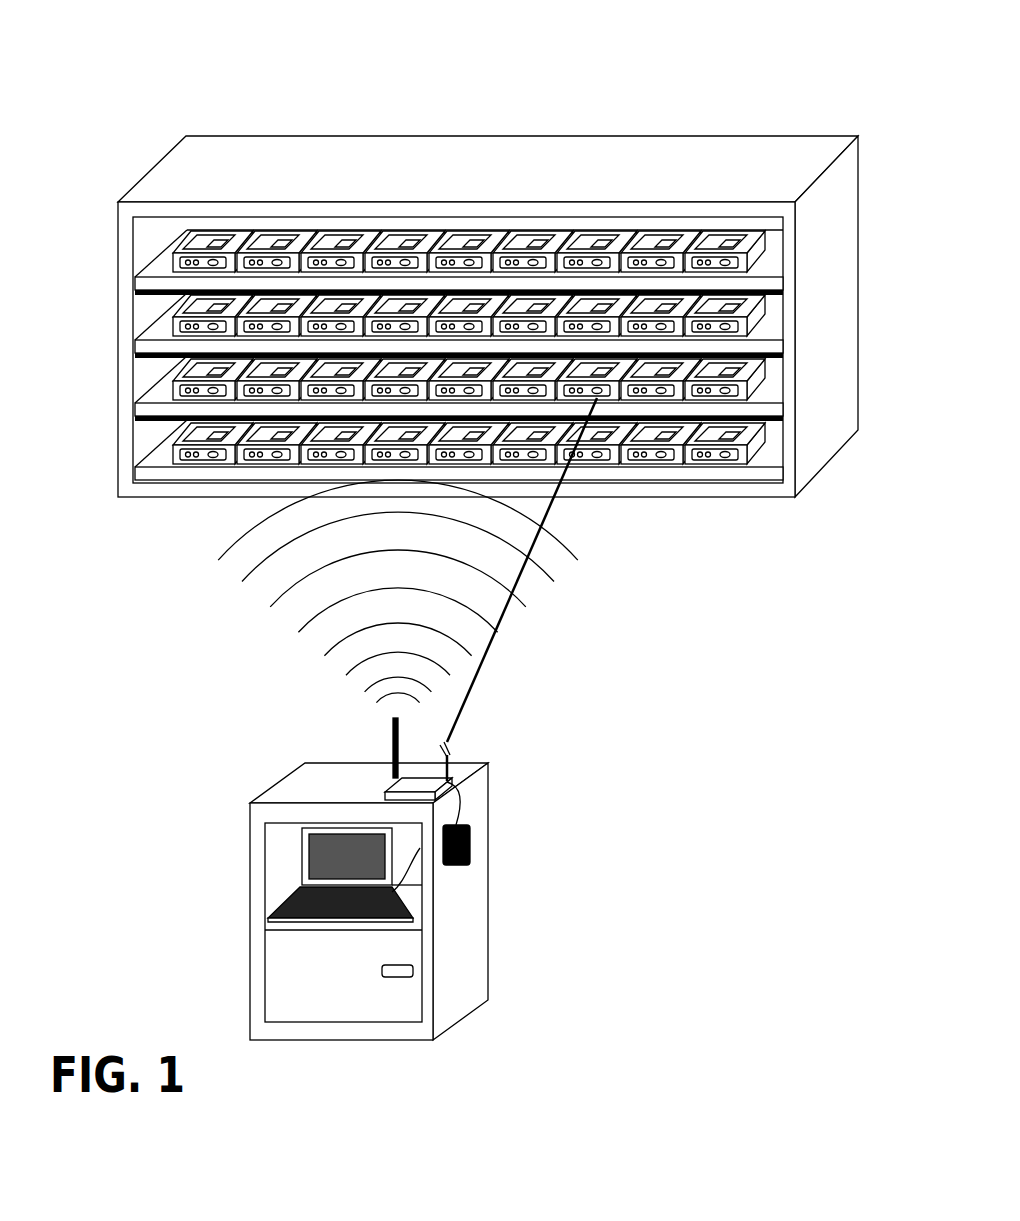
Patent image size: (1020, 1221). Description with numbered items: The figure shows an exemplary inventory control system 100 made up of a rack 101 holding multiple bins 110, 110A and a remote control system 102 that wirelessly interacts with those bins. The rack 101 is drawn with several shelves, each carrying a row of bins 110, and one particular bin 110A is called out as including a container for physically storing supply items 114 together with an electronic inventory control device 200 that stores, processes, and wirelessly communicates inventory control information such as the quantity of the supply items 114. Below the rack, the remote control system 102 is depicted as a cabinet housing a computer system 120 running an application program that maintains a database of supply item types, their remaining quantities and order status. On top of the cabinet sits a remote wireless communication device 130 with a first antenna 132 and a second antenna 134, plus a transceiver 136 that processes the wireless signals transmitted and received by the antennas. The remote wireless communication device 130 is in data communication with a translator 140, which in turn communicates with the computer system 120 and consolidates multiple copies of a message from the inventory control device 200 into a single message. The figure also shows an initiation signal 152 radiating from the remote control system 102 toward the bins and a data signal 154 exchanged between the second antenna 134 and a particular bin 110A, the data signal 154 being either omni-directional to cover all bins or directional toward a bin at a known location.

The inventory control system 100 is at (488, 520).
The rack 101 is at (488, 287).
The remote control system 102 is at (365, 879).
The bins 110 is at (509, 287).
The bin 110A is at (612, 240).
The supply items 114 is at (740, 307).
The computer system 120 is at (328, 873).
The remote wireless communication device 130 is at (374, 774).
The first antenna 132 is at (388, 740).
The second antenna 134 is at (455, 763).
The transceiver 136 is at (385, 790).
The translator 140 is at (476, 843).
The initiation signal 152 is at (330, 600).
The data signal 154 is at (520, 583).
The electronic inventory control device 200 is at (606, 403).